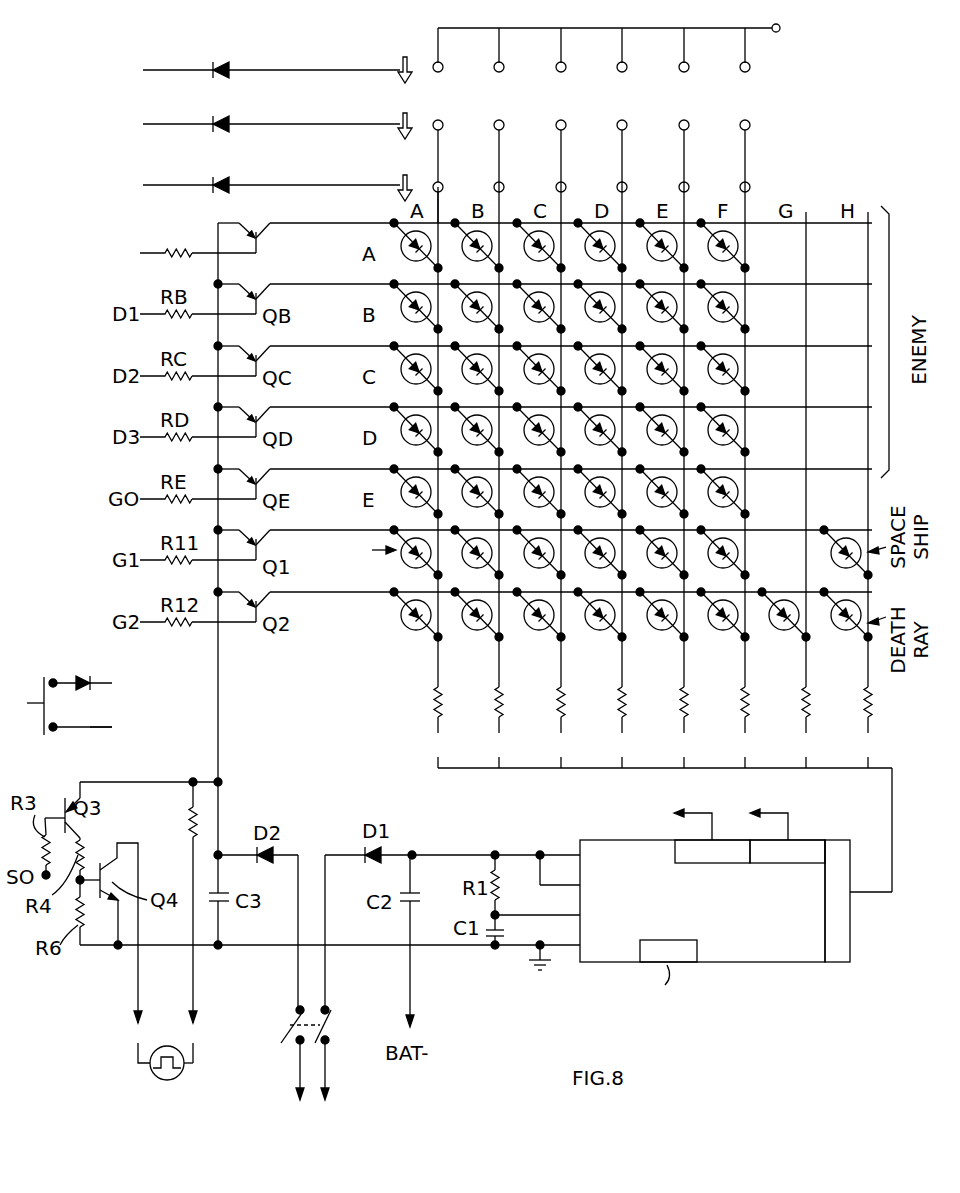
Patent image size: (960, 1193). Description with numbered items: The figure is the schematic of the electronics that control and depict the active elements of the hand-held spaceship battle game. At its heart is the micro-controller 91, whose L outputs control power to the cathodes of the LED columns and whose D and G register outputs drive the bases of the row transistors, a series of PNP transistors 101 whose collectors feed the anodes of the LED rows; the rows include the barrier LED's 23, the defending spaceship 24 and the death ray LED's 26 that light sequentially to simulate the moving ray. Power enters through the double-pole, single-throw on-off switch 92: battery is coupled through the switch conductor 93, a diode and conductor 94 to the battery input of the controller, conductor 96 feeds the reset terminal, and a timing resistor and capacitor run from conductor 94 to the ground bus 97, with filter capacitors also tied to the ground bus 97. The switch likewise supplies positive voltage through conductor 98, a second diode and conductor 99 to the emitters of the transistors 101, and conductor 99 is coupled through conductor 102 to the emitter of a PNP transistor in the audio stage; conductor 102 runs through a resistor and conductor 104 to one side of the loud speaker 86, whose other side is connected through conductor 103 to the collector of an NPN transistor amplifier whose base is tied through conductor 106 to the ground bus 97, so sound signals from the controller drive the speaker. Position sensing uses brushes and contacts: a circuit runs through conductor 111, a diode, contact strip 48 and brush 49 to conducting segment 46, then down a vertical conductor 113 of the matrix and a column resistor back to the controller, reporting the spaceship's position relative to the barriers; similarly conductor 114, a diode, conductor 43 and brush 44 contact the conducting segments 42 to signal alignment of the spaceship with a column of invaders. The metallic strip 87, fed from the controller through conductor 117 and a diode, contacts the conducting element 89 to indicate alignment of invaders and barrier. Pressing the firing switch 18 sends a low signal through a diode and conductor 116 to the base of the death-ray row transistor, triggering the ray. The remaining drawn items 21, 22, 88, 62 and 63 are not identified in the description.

The conductor 117 is at (163, 68).
The conductor 111 is at (170, 123).
The conductor 114 is at (170, 184).
The conducting element 89 is at (292, 68).
The contact strip 48 is at (285, 123).
The conductor 43 is at (278, 184).
The display array 21 is at (345, 110).
The brush 44 is at (400, 200).
The metallic strip 87 is at (410, 62).
The terminals 88 is at (760, 65).
The brush 49 is at (409, 122).
The conducting segment 46 is at (762, 125).
The conducting segments 42 is at (762, 183).
The vertical conductor 113 is at (442, 205).
The PNP transistors 101 is at (256, 220).
The LED matrix 22 is at (581, 511).
The barrier LED's 23 is at (760, 553).
The defending spaceship 24 is at (847, 528).
The death ray LED's 26 is at (378, 618).
The firing switch 18 is at (90, 692).
The switch line 63 is at (97, 672).
The switch line 62 is at (97, 728).
The conductor 116 is at (100, 734).
The conductor 99 is at (222, 762).
The conductor 102 is at (176, 780).
The conductor 103 is at (138, 997).
The conductor 106 is at (108, 948).
The conductor 104 is at (196, 991).
The loud speaker 86 is at (172, 1082).
The conductor 98 is at (297, 919).
The switch conductor 93 is at (326, 925).
The on-off switch 92 is at (346, 1010).
The conductor 94 is at (448, 852).
The conductor 96 is at (537, 874).
The ground bus 97 is at (517, 950).
The micro-controller 91 is at (715, 905).